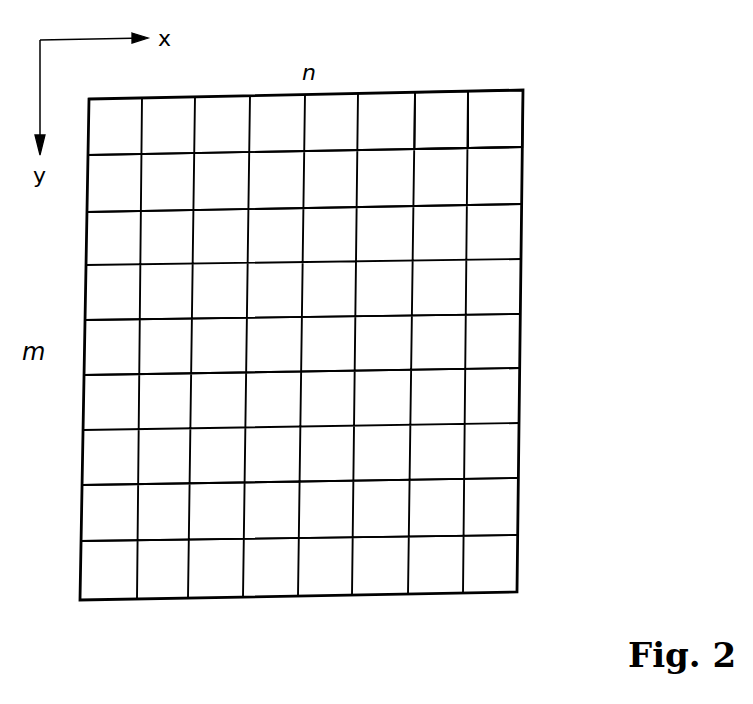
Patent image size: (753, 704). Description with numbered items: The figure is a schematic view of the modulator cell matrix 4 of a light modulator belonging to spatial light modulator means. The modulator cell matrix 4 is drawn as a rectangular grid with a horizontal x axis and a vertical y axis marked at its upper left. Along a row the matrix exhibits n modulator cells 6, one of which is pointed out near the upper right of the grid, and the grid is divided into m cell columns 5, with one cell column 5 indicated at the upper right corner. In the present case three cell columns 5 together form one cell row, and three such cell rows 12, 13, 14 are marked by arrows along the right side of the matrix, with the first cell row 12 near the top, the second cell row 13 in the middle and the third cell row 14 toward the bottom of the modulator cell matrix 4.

The modulator cell matrix 4 is at (576, 120).
The cell column 5 is at (510, 117).
The modulator cell 6 is at (438, 112).
The cell row 12 is at (535, 181).
The cell row 13 is at (538, 344).
The cell row 14 is at (533, 508).